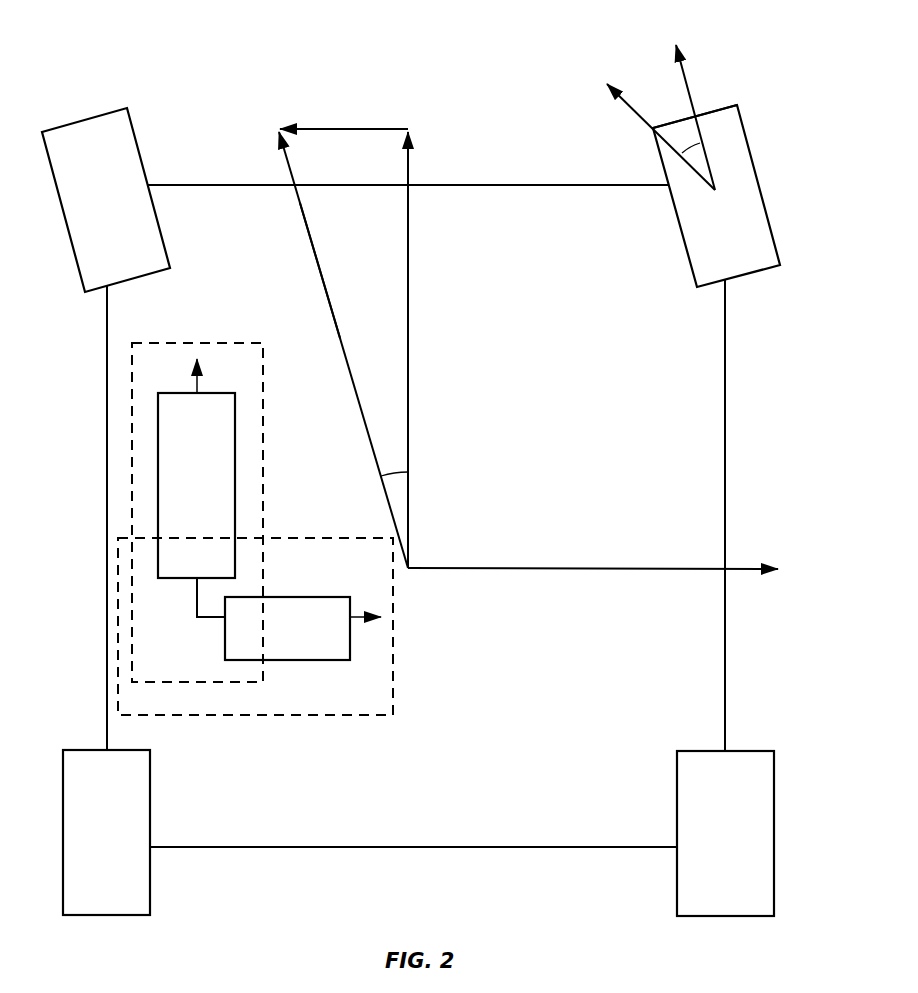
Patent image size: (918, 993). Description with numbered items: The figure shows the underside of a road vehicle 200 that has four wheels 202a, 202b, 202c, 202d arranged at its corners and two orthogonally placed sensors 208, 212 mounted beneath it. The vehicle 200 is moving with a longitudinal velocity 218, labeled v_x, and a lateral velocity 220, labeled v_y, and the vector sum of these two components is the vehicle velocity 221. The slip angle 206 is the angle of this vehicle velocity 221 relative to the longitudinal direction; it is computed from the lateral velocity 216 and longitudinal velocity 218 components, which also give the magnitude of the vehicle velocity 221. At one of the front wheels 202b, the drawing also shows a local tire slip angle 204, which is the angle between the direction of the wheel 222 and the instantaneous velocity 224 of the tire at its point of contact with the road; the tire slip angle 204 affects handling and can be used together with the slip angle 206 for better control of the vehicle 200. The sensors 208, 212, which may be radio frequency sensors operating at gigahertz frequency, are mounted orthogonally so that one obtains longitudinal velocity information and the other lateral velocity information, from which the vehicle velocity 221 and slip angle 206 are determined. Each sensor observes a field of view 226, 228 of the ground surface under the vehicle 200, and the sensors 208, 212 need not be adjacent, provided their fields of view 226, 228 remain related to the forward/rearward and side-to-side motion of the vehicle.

The vehicle 200 is at (176, 50).
The wheel 202a is at (106, 200).
The wheel 202b is at (716, 196).
The wheel 202c is at (106, 832).
The wheel 202d is at (725, 833).
The tire slip angle 204 is at (713, 112).
The slip angle 206 is at (392, 473).
The sensor 208 is at (196, 488).
The sensor 212 is at (303, 628).
The lateral velocity 216 is at (740, 570).
The longitudinal velocity 218 is at (408, 282).
The lateral velocity 220 is at (372, 128).
The vehicle velocity 221 is at (300, 212).
The direction of the wheel 222 is at (688, 87).
The instantaneous velocity 224 is at (640, 118).
The field of view 226 is at (197, 512).
The field of view 228 is at (255, 626).